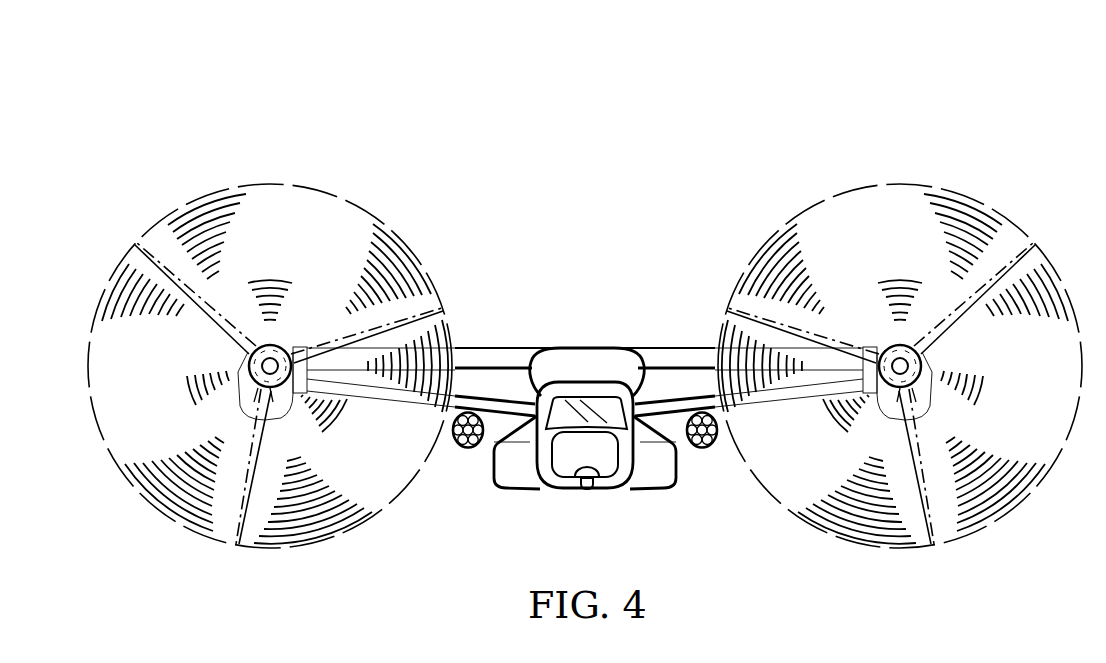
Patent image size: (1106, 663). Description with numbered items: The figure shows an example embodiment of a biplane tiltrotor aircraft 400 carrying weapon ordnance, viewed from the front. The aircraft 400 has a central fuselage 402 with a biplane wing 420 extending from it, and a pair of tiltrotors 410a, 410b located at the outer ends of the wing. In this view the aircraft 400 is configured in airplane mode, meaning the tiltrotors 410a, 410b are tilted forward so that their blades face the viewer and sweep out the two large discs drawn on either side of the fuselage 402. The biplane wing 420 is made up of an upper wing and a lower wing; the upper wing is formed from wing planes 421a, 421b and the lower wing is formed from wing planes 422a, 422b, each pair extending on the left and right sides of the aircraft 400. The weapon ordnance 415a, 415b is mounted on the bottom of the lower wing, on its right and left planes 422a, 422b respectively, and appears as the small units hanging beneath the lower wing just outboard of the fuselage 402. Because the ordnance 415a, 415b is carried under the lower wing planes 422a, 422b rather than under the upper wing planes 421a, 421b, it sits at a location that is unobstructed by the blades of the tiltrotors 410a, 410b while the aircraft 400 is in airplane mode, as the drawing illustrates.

The biplane tiltrotor aircraft 400 is at (375, 87).
The fuselage 402 is at (584, 388).
The tiltrotor 410a is at (954, 193).
The tiltrotor 410b is at (216, 193).
The weapon ordnance 415a is at (702, 449).
The weapon ordnance 415b is at (468, 449).
The biplane wing 420 is at (550, 268).
The wing plane 421a is at (678, 347).
The wing plane 421b is at (497, 347).
The wing plane 422a is at (653, 420).
The wing plane 422b is at (517, 420).